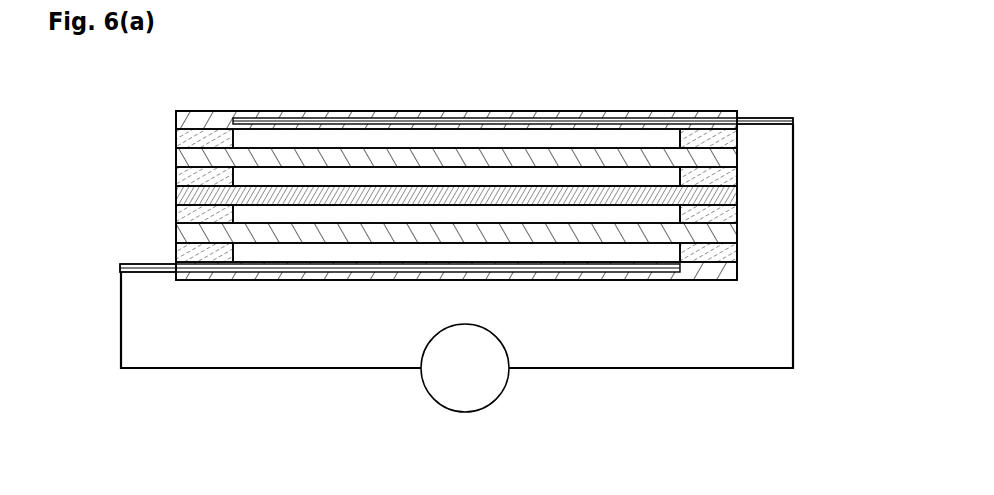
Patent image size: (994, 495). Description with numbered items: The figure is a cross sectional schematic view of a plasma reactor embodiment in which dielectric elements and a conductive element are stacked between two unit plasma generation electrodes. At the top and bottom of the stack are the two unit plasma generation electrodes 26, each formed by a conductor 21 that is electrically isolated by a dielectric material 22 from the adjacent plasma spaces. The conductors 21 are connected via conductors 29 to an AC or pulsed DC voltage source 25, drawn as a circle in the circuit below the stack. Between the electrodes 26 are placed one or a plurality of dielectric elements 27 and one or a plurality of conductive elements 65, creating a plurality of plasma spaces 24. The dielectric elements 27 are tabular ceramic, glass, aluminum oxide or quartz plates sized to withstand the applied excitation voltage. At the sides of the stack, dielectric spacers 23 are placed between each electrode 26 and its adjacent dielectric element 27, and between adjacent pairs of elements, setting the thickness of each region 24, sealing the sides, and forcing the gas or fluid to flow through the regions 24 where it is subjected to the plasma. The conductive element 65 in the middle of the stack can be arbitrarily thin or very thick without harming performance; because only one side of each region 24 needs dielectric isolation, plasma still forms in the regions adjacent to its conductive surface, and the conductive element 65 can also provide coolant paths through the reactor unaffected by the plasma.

The conductor 21 is at (763, 116).
The dielectric material 22 is at (238, 110).
The dielectric spacer 23 is at (176, 136).
The plasma-discharge region 24 is at (252, 213).
The AC or pulsed DC voltage source 25 is at (497, 377).
The unit plasma generation electrode 26 is at (500, 114).
The dielectric element 27 is at (723, 158).
The conductor 29 is at (198, 368).
The conductive element 65 is at (176, 192).